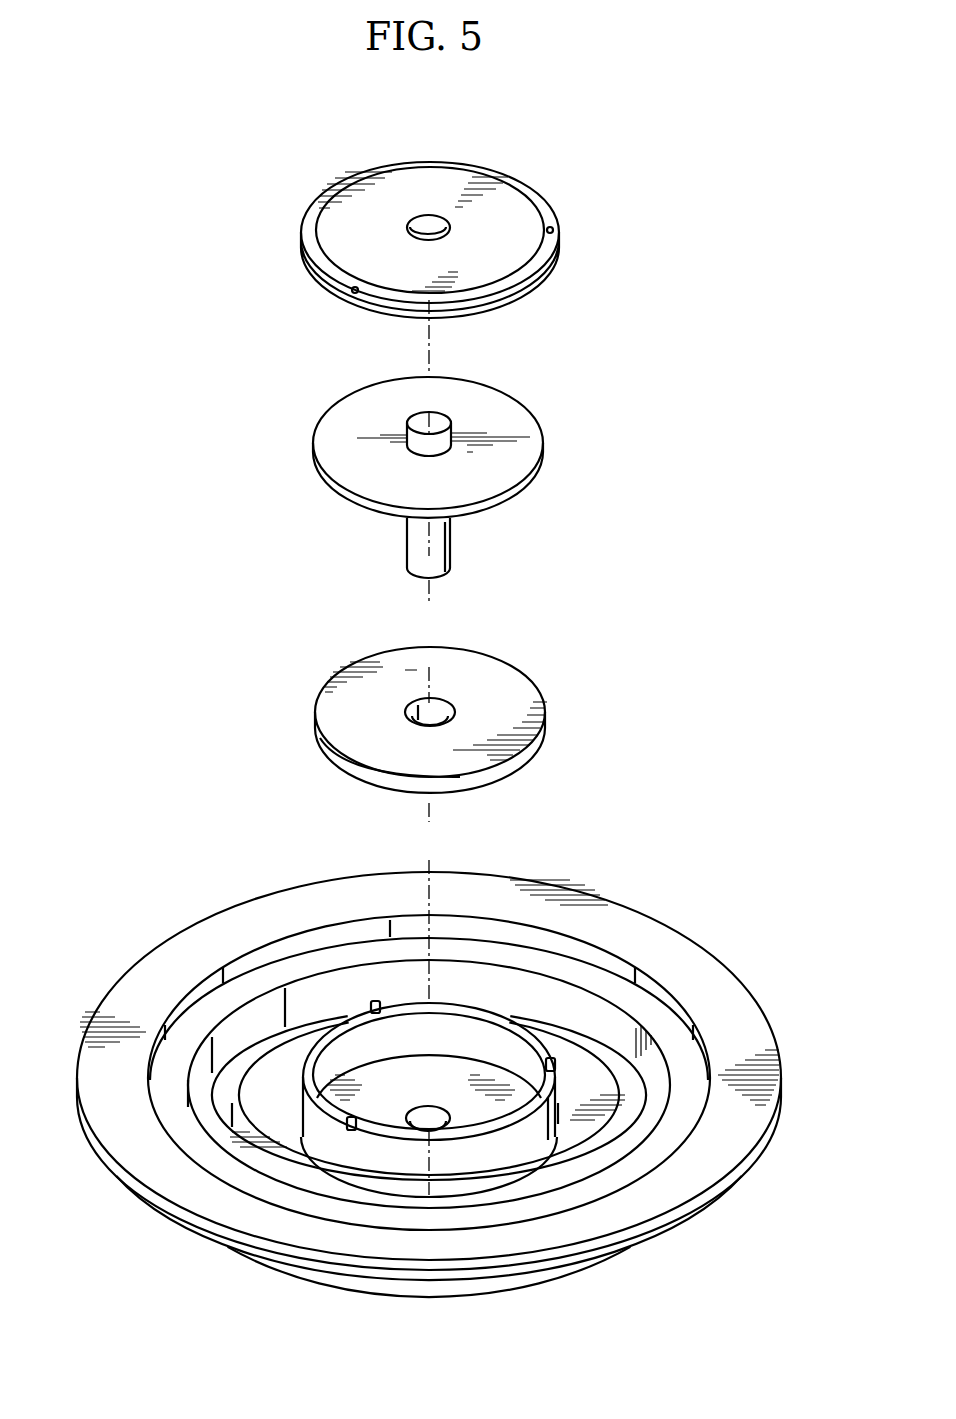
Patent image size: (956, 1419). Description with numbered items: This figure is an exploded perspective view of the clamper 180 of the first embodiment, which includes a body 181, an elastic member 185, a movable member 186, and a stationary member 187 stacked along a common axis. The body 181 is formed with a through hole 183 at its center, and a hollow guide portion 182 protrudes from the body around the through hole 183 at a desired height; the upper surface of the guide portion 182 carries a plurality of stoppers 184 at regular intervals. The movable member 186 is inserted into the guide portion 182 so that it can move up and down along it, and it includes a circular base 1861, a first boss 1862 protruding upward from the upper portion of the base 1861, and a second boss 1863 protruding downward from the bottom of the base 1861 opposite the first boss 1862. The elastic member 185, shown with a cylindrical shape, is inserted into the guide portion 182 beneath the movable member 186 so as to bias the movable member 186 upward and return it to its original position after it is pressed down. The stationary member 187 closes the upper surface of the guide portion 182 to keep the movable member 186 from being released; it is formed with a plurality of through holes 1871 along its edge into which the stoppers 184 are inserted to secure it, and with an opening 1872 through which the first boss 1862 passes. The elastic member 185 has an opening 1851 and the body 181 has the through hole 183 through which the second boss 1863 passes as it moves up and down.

The clamper 180 is at (188, 242).
The body 181 is at (758, 1018).
The guide portion 182 is at (356, 1156).
The through hole 183 is at (438, 1112).
The stoppers 184 is at (554, 1060).
The elastic member 185 is at (512, 687).
The opening 1851 is at (421, 714).
The movable member 186 is at (545, 466).
The base 1861 is at (343, 460).
The first boss 1862 is at (440, 426).
The second boss 1863 is at (440, 557).
The stationary member 187 is at (364, 210).
The through holes 1871 is at (552, 228).
The opening 1872 is at (432, 230).